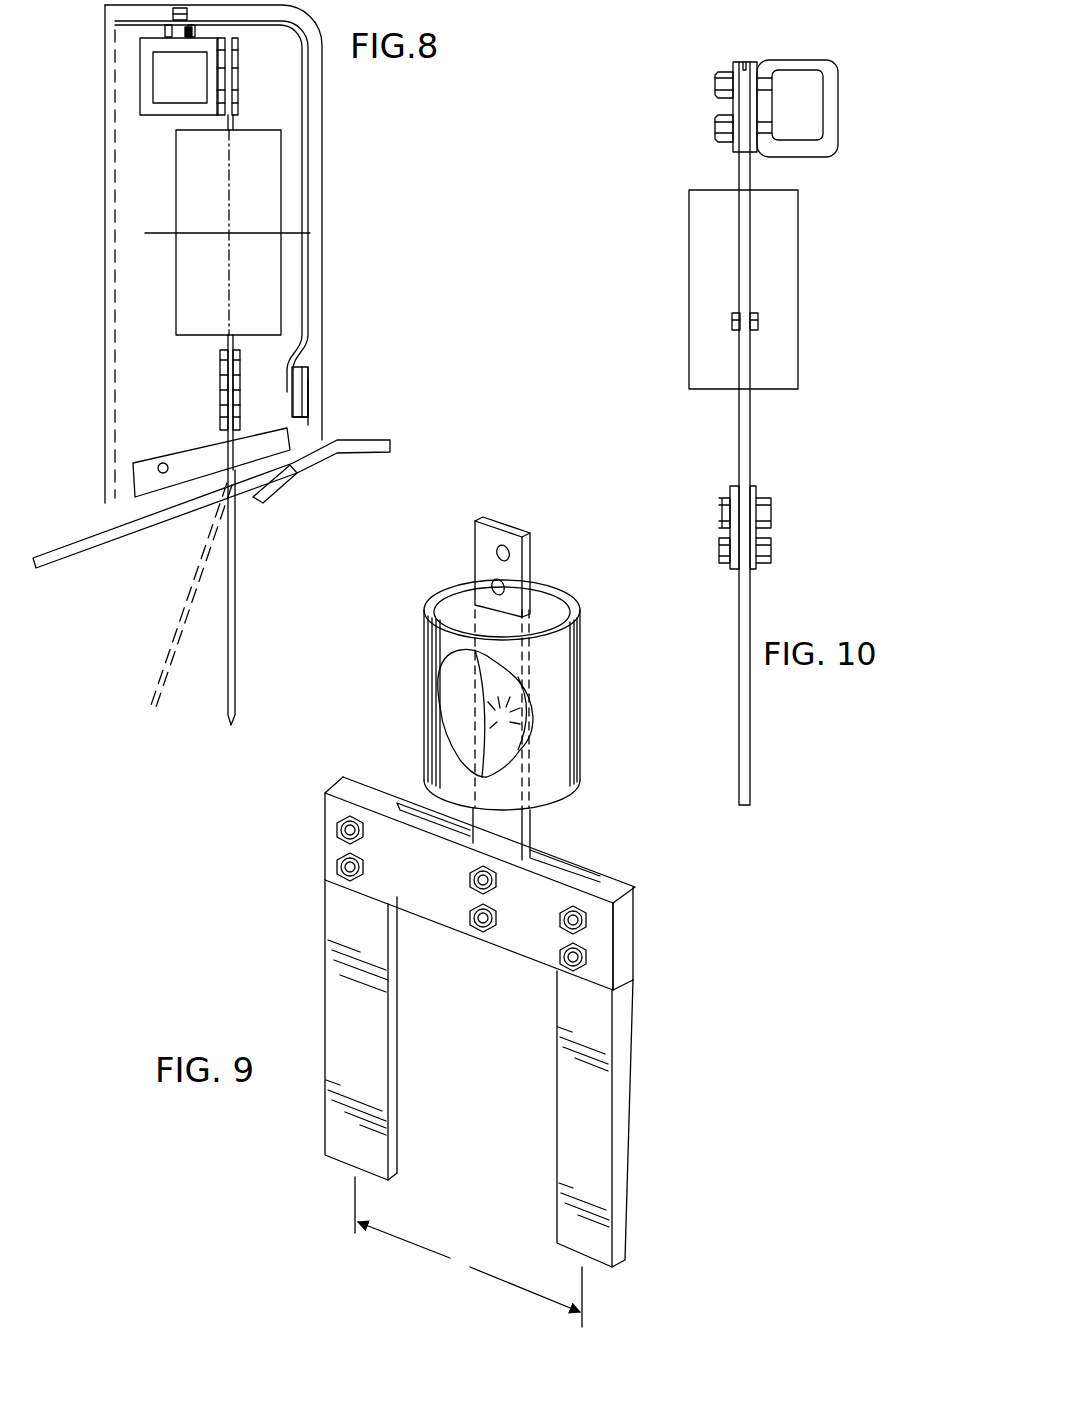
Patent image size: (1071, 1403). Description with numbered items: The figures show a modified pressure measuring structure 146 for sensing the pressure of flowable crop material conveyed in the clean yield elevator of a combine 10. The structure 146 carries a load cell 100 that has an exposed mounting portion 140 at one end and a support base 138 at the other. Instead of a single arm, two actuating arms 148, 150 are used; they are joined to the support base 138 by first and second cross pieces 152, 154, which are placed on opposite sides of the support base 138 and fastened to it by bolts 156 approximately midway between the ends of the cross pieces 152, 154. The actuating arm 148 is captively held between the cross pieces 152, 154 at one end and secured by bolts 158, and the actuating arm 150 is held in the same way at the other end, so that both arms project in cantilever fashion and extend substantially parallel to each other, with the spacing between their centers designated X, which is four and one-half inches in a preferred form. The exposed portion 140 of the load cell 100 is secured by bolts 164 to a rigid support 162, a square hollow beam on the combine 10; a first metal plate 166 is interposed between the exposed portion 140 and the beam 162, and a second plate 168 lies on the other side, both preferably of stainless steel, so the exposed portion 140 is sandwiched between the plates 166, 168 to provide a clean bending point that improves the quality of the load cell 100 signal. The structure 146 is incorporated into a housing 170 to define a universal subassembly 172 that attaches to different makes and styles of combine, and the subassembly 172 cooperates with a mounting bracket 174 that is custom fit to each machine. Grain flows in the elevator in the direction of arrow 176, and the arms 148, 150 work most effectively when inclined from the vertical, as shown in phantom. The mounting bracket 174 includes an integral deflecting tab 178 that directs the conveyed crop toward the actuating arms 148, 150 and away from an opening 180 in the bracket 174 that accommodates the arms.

In FIG. 9, the combine 10 is at (505, 520).
In FIG. 10, the combine 10 is at (685, 65).
In FIG. 8, the load cell 100 is at (288, 265).
In FIG. 9, the load cell 100 is at (420, 700).
In FIG. 10, the load cell 100 is at (686, 288).
In FIG. 8, the support base 138 is at (228, 345).
In FIG. 9, the support base 138 is at (505, 826).
In FIG. 10, the support base 138 is at (745, 447).
In FIG. 9, the exposed mounting portion 140 is at (512, 548).
In FIG. 10, the exposed mounting portion 140 is at (737, 180).
In FIG. 8, the pressure measuring structure 146 is at (336, 135).
In FIG. 9, the pressure measuring structure 146 is at (612, 712).
In FIG. 10, the pressure measuring structure 146 is at (630, 258).
In FIG. 8, the actuating arm 148 is at (225, 605).
In FIG. 9, the actuating arm 148 is at (332, 970).
In FIG. 10, the actuating arm 148 is at (740, 720).
In FIG. 9, the actuating arm 150 is at (590, 1098).
In FIG. 8, the first cross piece 152 is at (222, 395).
In FIG. 9, the first cross piece 152 is at (565, 864).
In FIG. 10, the first cross piece 152 is at (752, 496).
In FIG. 8, the second cross piece 154 is at (238, 392).
In FIG. 9, the second cross piece 154 is at (533, 945).
In FIG. 10, the second cross piece 154 is at (736, 488).
In FIG. 9, the bolts 156 is at (476, 884).
In FIG. 9, the bolts 158 is at (340, 868).
In FIG. 10, the rigid support 162 is at (823, 62).
In FIG. 10, the bolts 164 is at (743, 62).
In FIG. 10, the first metal plate 166 is at (752, 113).
In FIG. 10, the second plate 168 is at (733, 108).
In FIG. 8, the housing 170 is at (325, 188).
In FIG. 8, the subassembly 172 is at (326, 340).
In FIG. 8, the mounting bracket 174 is at (357, 440).
In FIG. 8, the arrow 176 is at (252, 538).
In FIG. 8, the deflecting tab 178 is at (278, 485).
In FIG. 8, the opening 180 is at (205, 488).
In FIG. 9, the spacing between arm centers X is at (468, 1252).